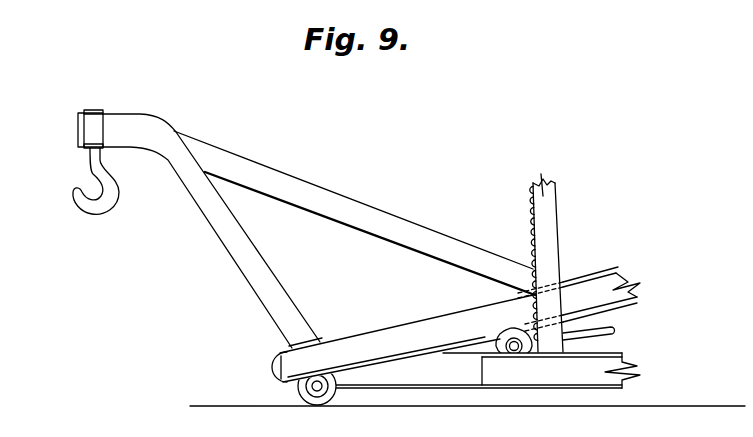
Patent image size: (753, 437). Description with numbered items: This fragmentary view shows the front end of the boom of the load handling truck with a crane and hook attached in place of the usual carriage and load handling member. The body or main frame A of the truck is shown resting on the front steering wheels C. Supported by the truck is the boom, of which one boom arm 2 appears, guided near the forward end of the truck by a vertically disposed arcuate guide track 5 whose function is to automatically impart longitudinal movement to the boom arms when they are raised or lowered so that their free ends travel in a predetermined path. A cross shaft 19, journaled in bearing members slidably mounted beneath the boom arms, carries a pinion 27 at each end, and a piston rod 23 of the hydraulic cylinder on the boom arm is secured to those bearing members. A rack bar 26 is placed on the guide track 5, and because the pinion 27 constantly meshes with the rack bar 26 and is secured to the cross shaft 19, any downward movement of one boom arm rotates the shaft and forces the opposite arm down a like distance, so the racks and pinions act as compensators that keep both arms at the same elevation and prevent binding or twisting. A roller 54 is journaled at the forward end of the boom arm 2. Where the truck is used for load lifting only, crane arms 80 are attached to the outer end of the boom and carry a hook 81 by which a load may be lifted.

The hook 81 is at (104, 213).
The crane arms 80 is at (358, 227).
The rack bar 26 is at (528, 198).
The arcuate guide track 5 is at (558, 210).
The boom arm 2 is at (617, 270).
The piston rod 23 is at (613, 333).
The roller 54 is at (272, 366).
The front steering wheels C is at (318, 400).
The pinion 27 is at (497, 356).
The cross shaft 19 is at (512, 351).
The body or main frame A is at (557, 390).